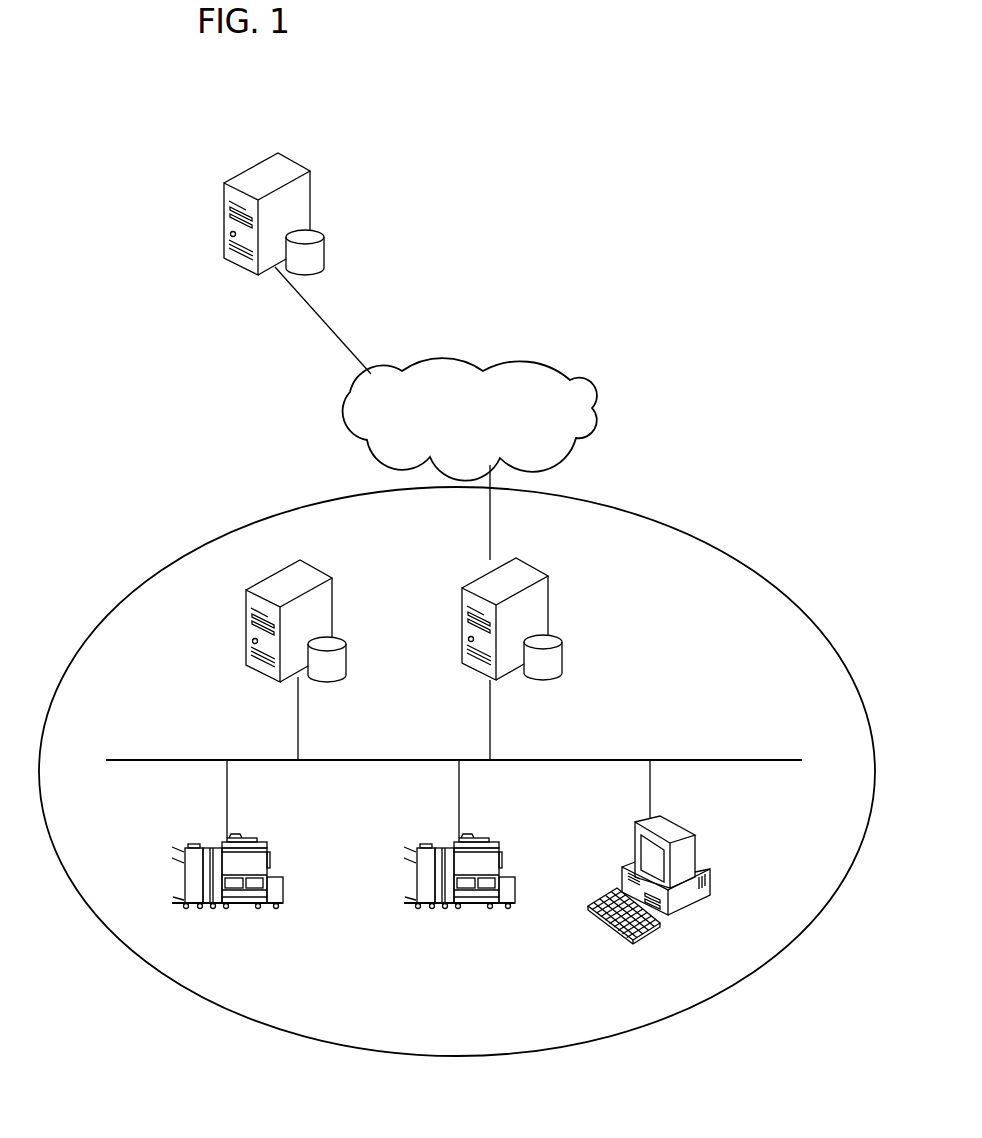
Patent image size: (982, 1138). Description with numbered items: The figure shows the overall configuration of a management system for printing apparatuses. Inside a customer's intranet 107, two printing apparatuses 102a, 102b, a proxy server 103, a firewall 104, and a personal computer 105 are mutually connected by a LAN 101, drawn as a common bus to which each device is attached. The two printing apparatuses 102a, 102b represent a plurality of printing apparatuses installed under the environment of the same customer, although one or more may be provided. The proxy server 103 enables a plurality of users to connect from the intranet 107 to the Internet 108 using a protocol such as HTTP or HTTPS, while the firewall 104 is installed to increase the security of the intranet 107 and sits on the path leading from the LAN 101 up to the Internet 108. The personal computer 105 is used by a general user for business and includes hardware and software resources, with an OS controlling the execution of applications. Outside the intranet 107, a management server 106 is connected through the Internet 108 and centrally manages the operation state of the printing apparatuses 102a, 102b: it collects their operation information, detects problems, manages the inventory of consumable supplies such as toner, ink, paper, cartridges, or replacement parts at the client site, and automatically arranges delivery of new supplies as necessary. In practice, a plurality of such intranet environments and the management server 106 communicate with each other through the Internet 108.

The LAN 101 is at (757, 760).
The printing apparatus 102a is at (293, 824).
The printing apparatus 102b is at (525, 824).
The proxy server 103 is at (331, 587).
The firewall 104 is at (575, 583).
The personal computer (PC) 105 is at (695, 833).
The management server 106 is at (309, 173).
The intranet 107 is at (752, 568).
The Internet 108 is at (583, 380).